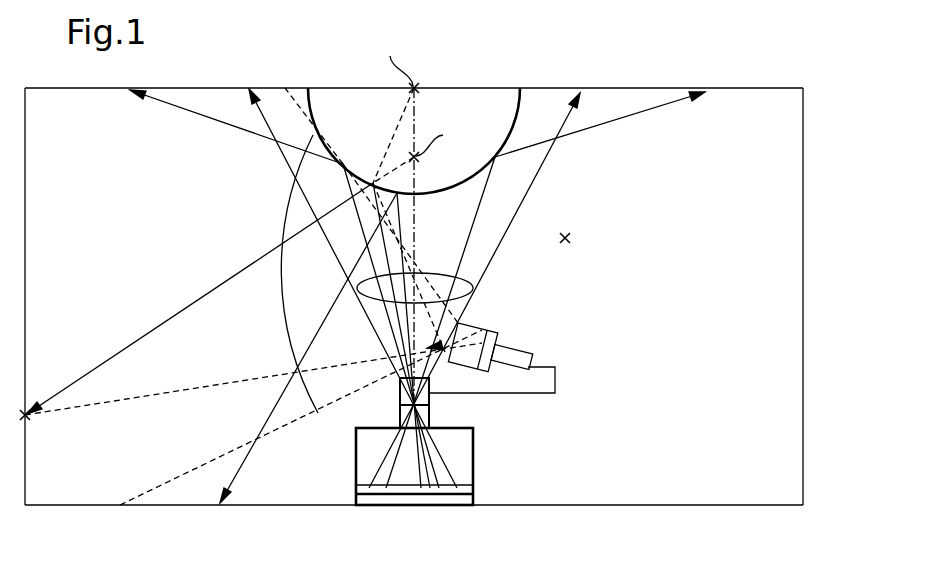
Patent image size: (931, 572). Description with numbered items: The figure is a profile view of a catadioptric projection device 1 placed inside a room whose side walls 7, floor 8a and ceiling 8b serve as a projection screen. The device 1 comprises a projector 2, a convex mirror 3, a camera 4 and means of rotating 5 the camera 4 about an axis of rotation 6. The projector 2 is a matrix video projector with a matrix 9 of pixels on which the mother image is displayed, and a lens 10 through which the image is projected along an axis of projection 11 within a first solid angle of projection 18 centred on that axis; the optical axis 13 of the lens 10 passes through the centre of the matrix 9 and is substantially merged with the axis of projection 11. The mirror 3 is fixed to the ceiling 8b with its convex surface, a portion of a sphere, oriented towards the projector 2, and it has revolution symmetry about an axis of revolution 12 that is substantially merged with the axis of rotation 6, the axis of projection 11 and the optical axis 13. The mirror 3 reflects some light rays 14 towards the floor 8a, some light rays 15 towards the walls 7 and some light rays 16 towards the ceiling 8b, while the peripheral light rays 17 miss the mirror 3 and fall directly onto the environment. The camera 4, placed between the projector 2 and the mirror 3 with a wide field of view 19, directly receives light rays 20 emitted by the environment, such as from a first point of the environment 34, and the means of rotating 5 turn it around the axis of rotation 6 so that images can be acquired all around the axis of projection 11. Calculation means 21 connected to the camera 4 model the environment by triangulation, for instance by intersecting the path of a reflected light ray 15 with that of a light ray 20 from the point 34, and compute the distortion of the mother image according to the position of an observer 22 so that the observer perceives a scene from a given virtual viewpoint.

The device 1 is at (523, 286).
The projector 2 is at (463, 466).
The calculation means 21 is at (474, 453).
The convex mirror 3 is at (471, 188).
The camera 4 is at (531, 343).
The means of rotating 5 is at (562, 384).
The axis of rotation 6 is at (482, 217).
The axis of projection 11 is at (482, 217).
The axis of revolution 12 is at (482, 217).
The optical axis 13 is at (414, 117).
The side walls 7 is at (26, 234).
The floor 8a is at (690, 505).
The ceiling 8b is at (678, 87).
The matrix 9 is at (400, 489).
The lens 10 is at (431, 421).
The light rays 14 is at (293, 357).
The light rays 15 is at (180, 313).
The light rays 16 is at (180, 110).
The light rays 17 is at (256, 100).
The first solid angle of projection 18 is at (440, 276).
The field of view 19 is at (282, 232).
The light rays 20 is at (160, 393).
The observer 22 is at (568, 237).
The first point of the environment 34 is at (27, 418).